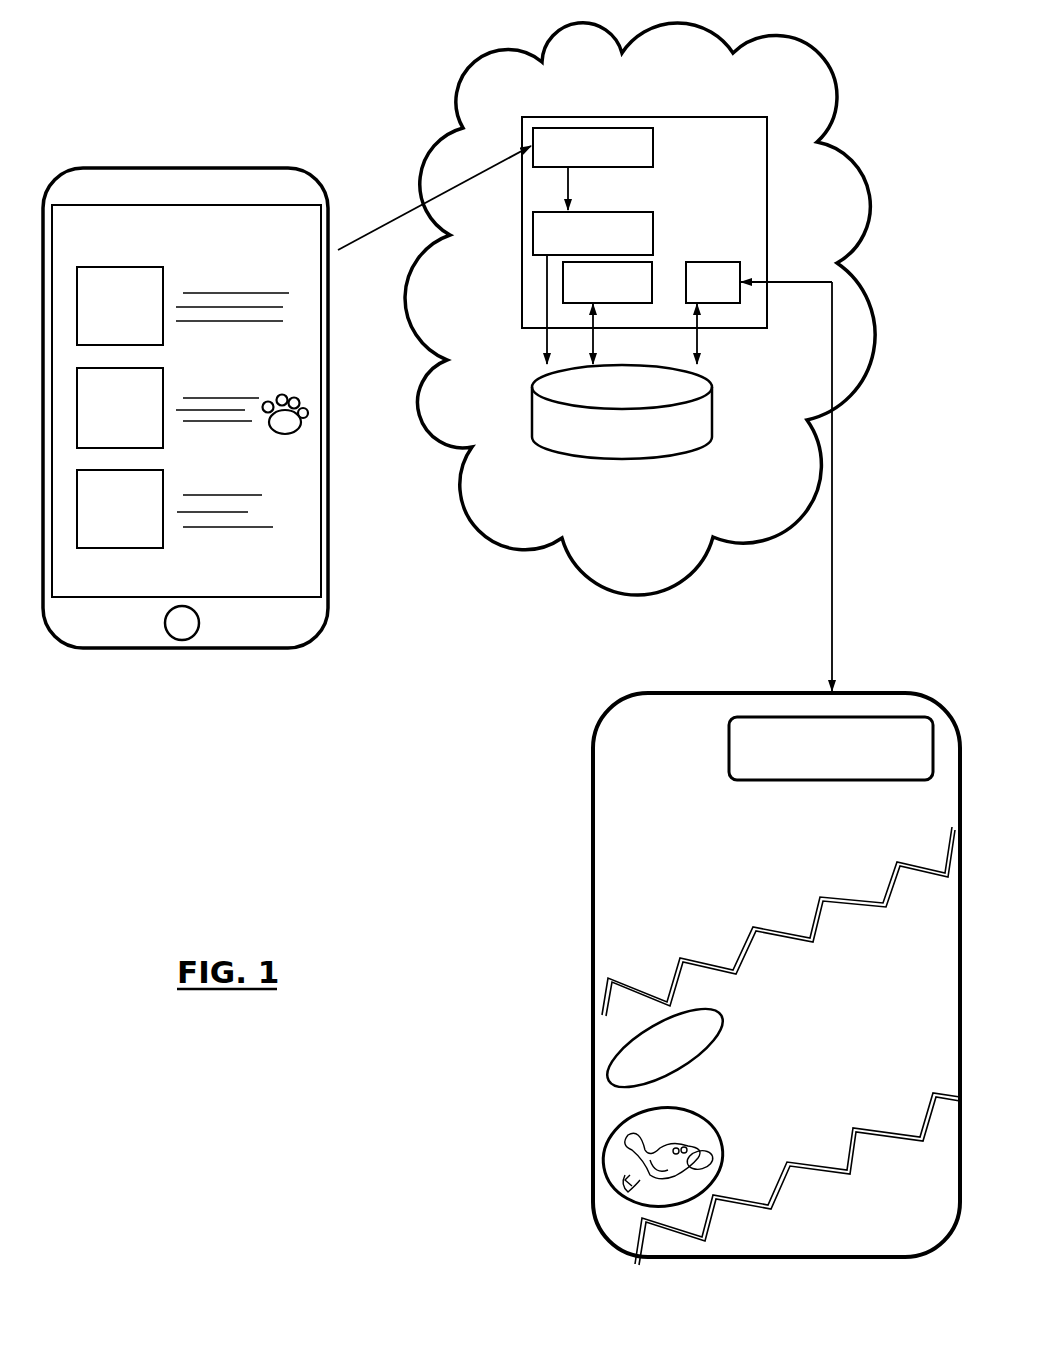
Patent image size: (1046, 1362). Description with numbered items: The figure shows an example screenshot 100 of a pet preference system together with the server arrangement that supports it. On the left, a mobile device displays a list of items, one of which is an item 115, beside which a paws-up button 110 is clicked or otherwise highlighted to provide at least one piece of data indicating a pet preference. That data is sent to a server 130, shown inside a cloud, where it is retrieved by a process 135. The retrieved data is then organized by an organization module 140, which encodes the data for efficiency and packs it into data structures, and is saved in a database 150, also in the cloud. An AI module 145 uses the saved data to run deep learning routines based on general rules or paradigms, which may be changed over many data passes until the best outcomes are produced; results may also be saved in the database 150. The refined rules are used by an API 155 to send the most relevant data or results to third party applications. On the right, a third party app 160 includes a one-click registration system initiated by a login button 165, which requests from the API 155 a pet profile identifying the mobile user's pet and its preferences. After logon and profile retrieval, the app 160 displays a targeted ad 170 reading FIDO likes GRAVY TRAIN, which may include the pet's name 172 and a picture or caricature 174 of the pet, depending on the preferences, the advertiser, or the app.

The screenshot 100 is at (293, 635).
The paws-up button 110 is at (297, 441).
The app list item 115 is at (158, 435).
The server 130 is at (741, 158).
The process 135 is at (643, 158).
The organization module 140 is at (643, 243).
The AI module 145 is at (643, 293).
The database 150 is at (683, 443).
The API 155 is at (729, 295).
The third party app 160 is at (896, 1238).
The login button 165 is at (722, 757).
The targeted ad 170 is at (747, 1039).
The pet name 172 is at (619, 1040).
The picture or caricature 174 is at (617, 1125).